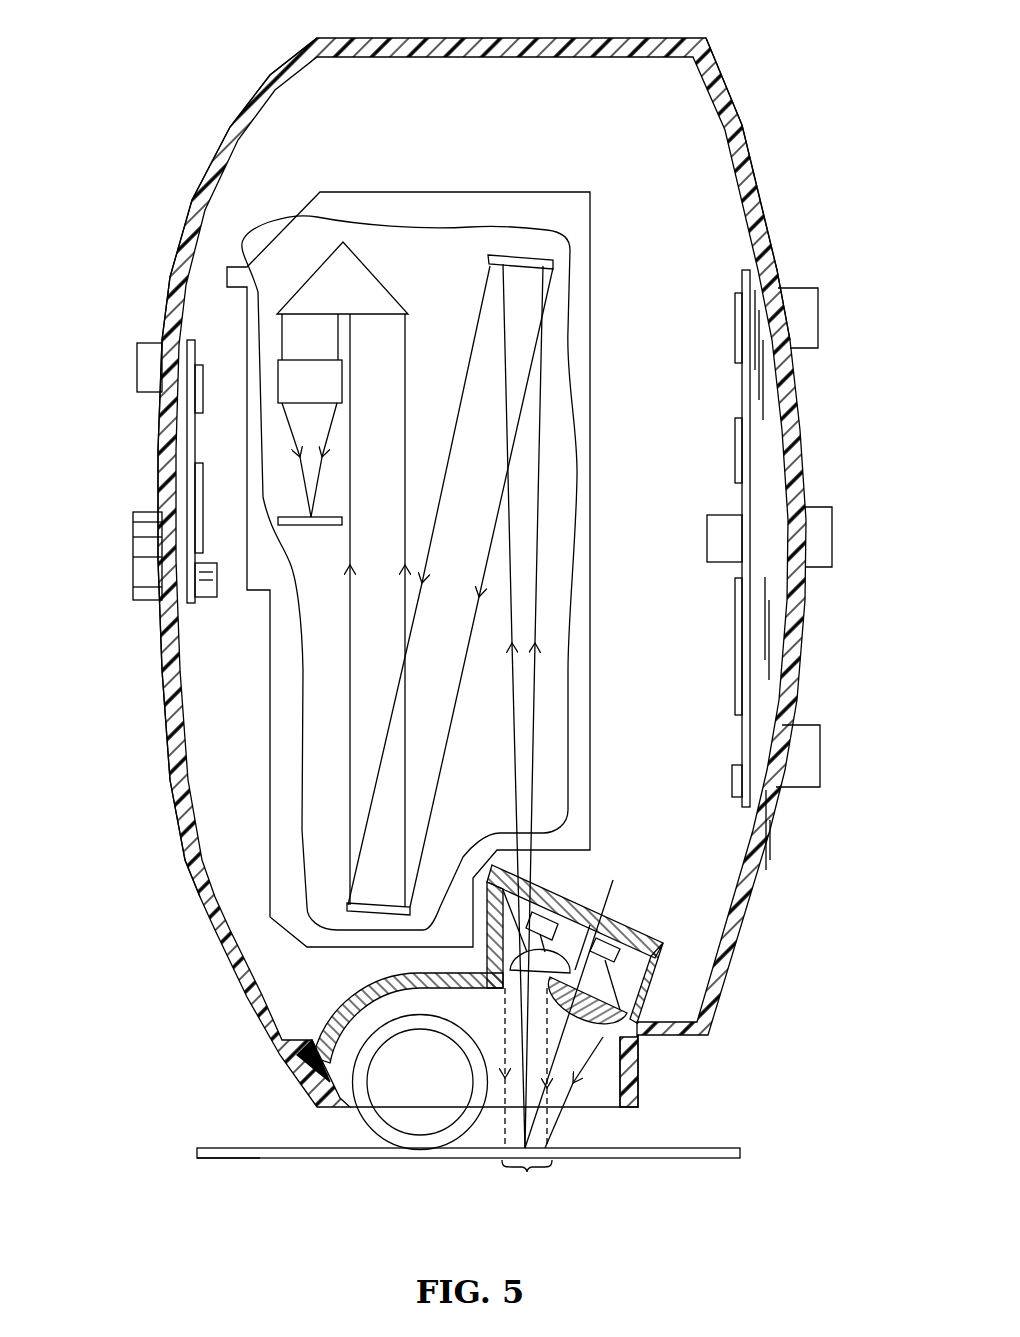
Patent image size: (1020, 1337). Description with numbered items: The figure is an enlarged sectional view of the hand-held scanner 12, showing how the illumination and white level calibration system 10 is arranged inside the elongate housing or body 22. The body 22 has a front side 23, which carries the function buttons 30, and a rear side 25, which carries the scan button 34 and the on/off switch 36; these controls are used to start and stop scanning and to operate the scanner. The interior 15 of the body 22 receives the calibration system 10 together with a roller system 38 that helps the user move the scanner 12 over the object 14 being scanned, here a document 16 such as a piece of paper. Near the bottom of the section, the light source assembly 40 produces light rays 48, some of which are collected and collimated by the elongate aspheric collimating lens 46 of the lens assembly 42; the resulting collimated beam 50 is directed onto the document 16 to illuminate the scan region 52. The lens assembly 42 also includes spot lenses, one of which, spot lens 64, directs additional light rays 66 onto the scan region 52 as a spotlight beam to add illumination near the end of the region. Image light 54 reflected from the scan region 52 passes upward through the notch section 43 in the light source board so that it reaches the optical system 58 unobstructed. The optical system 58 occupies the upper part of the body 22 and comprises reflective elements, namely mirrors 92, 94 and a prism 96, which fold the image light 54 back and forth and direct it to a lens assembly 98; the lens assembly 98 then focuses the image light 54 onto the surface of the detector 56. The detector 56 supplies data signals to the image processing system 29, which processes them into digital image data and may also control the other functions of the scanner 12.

The illumination and white level calibration system 10 is at (213, 55).
The hand-held scanner 12 is at (178, 204).
The object 14 is at (207, 1162).
The interior 15 is at (385, 131).
The document 16 is at (727, 1148).
The housing or body 22 is at (680, 38).
The front side 23 is at (742, 110).
The rear side 25 is at (162, 690).
The image processing system 29 is at (720, 277).
The function buttons 30 is at (822, 318).
The scan button 34 is at (133, 540).
The on/off switch 36 is at (137, 368).
The roller system 38 is at (365, 1125).
The light source assembly 40 is at (640, 916).
The lens assembly 42 is at (650, 999).
The notch section 43 is at (562, 948).
The aspheric collimating lens 46 is at (632, 1062).
The light rays 48 is at (642, 975).
The collimated beam 50 is at (580, 1073).
The scan region 52 is at (527, 1097).
The image light 54 is at (542, 495).
The detector 56 is at (278, 517).
The optical system 58 is at (457, 188).
The spot lens 64 is at (567, 1001).
The additional light rays 66 is at (487, 955).
The mirror 92 is at (590, 232).
The mirror 94 is at (282, 917).
The prism 96 is at (380, 270).
The lens assembly 98 is at (278, 383).